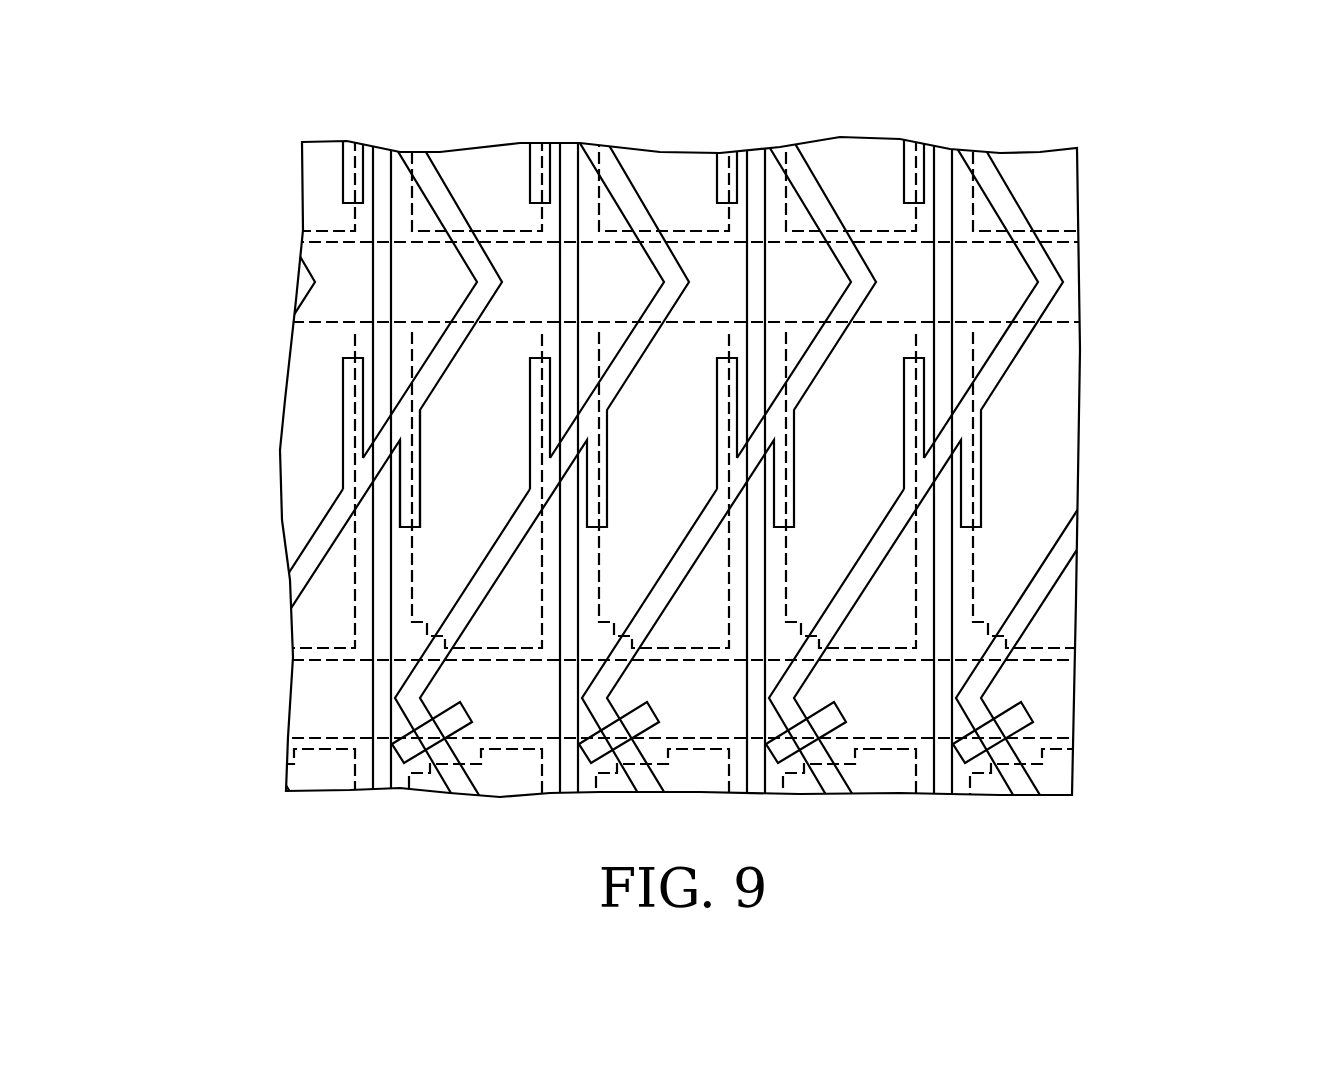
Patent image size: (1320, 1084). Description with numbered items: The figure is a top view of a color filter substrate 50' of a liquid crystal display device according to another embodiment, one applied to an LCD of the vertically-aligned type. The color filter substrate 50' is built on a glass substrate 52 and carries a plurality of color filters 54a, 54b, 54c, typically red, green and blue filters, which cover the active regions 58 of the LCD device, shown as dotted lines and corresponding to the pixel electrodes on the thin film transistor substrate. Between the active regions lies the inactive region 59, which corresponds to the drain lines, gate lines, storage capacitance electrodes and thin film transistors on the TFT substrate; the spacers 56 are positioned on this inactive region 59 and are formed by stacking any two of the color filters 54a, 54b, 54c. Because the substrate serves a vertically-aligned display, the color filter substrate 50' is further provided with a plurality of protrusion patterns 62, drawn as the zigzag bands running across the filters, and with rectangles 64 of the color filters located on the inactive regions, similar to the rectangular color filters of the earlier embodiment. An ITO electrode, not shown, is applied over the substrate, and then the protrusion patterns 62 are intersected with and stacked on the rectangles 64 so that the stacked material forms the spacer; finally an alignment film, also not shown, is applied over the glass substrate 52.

The color filter substrate 50' is at (780, 443).
The glass substrate 52 is at (940, 783).
The color filter 54a is at (480, 172).
The color filter 54b is at (688, 172).
The color filter 54c is at (867, 173).
The spacer 56 is at (998, 272).
The active region 58 is at (408, 492).
The inactive region 59 is at (407, 278).
The protrusion pattern 62 is at (1040, 300).
The rectangle 64 is at (1015, 722).